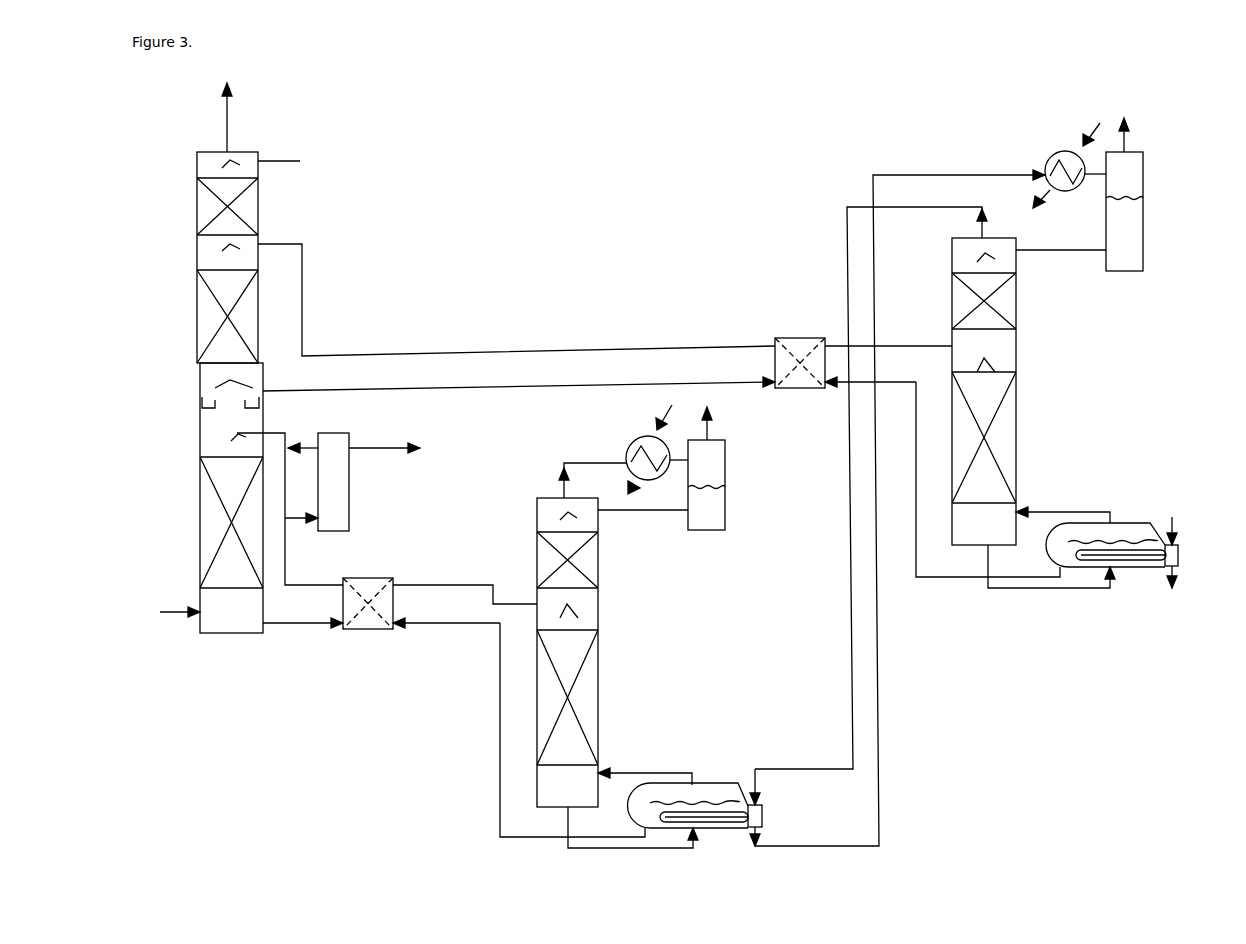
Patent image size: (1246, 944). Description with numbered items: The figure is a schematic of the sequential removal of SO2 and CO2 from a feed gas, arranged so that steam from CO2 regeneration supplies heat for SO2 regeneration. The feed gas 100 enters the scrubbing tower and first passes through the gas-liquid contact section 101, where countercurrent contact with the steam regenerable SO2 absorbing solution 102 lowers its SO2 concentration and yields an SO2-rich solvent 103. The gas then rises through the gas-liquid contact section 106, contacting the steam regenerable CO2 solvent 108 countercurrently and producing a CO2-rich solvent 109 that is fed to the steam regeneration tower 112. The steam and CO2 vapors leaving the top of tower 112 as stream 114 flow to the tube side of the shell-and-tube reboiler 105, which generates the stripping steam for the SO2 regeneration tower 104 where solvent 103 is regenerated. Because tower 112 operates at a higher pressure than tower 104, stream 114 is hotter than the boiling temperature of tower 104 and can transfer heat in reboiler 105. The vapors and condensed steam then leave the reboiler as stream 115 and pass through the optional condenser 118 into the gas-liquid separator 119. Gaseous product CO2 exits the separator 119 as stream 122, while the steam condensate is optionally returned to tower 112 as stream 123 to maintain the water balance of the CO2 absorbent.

The feed stream 100 is at (180, 628).
The gas-liquid contact section 101 is at (215, 520).
The steam regenerable SO2 absorbing solution 102 is at (292, 432).
The SO2-rich solvent 103 is at (308, 637).
The SO2 regeneration tower 104 is at (603, 624).
The shell-and-tube reboiler 105 is at (722, 772).
The gas-liquid contact section 106 is at (210, 310).
The steam regenerable CO2 solvent 108 is at (315, 286).
The CO2-rich solvent 109 is at (533, 400).
The steam regeneration tower 112 is at (1033, 363).
The overhead stream 114 is at (833, 263).
The return line 115 is at (892, 798).
The condenser 118 is at (1045, 150).
The gas-liquid separator 119 is at (1157, 235).
The gaseous product CO2 stream 122 is at (1150, 130).
The steam condensate return stream 123 is at (1062, 260).